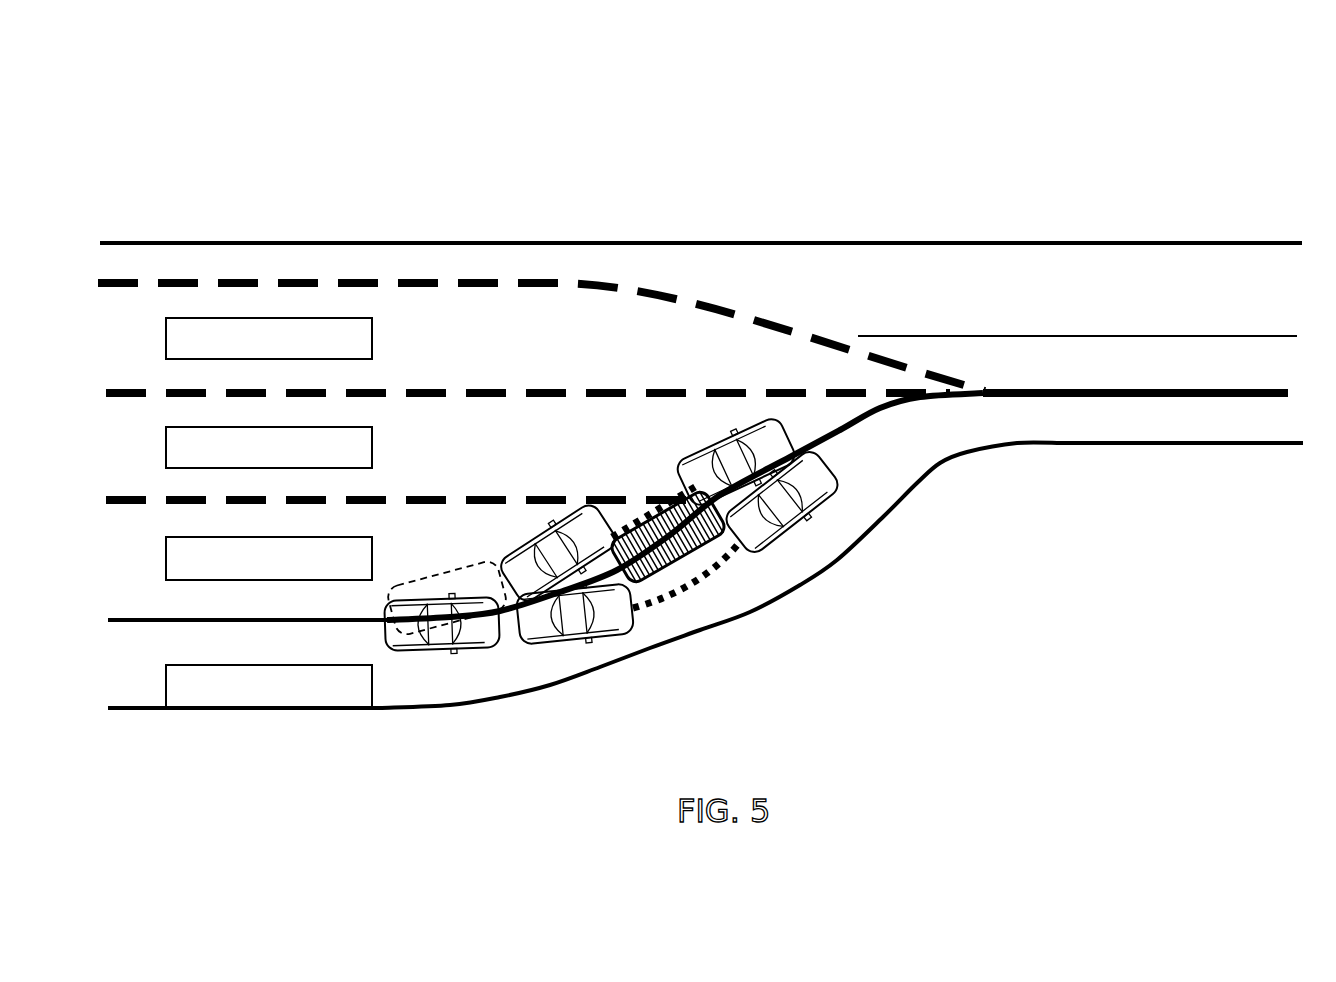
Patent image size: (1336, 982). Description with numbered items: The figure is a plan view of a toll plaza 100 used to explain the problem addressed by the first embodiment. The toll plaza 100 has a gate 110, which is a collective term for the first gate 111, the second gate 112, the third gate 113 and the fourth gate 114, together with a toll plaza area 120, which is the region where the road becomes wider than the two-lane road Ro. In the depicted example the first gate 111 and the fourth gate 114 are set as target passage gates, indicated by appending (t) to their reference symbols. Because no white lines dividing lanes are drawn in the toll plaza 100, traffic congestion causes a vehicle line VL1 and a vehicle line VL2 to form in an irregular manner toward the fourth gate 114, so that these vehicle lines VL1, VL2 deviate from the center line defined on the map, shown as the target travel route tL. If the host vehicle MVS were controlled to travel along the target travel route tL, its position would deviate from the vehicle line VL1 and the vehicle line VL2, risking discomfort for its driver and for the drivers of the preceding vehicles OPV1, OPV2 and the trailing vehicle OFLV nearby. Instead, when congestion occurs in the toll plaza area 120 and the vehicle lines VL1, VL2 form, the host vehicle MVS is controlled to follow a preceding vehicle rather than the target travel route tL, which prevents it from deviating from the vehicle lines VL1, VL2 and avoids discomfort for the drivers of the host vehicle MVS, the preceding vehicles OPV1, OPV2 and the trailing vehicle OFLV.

The toll plaza 100 is at (490, 100).
The gate 110 is at (296, 212).
The first gate 111 is at (240, 262).
The second gate 112 is at (187, 375).
The third gate 113 is at (198, 517).
The fourth gate 114 is at (253, 632).
The toll plaza area 120 is at (667, 262).
The two-lane road Ro is at (1166, 282).
The preceding vehicle OPV1 is at (452, 580).
The preceding vehicle OPV2 is at (523, 553).
The trailing vehicle OFLV is at (717, 473).
The host vehicle MVS is at (683, 560).
The vehicle line VL1 is at (740, 545).
The vehicle line VL2 is at (636, 512).
The target travel route tL is at (855, 437).